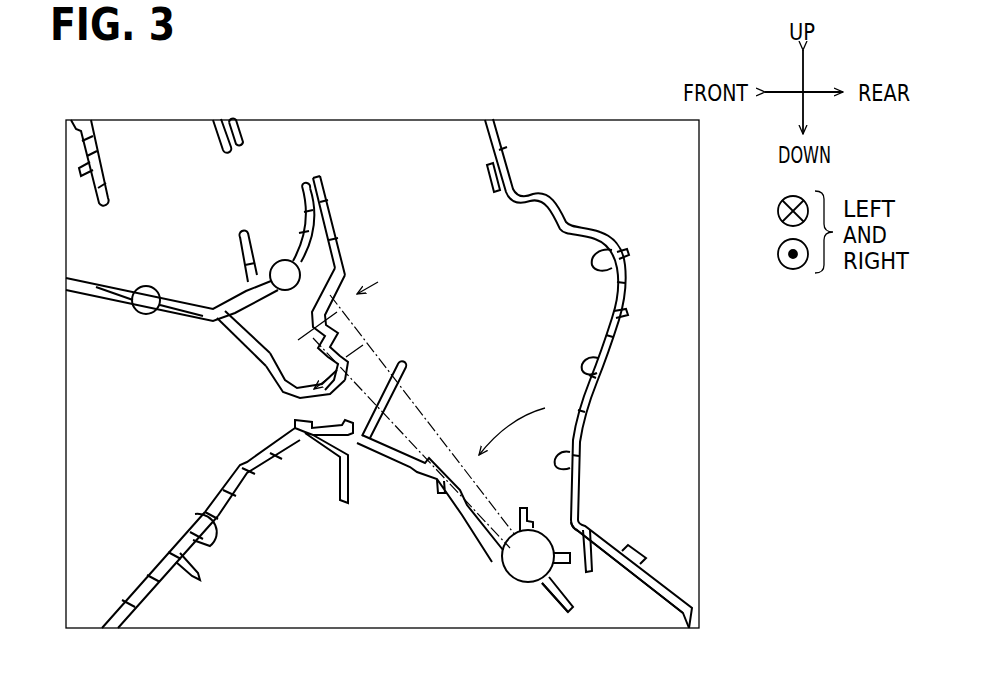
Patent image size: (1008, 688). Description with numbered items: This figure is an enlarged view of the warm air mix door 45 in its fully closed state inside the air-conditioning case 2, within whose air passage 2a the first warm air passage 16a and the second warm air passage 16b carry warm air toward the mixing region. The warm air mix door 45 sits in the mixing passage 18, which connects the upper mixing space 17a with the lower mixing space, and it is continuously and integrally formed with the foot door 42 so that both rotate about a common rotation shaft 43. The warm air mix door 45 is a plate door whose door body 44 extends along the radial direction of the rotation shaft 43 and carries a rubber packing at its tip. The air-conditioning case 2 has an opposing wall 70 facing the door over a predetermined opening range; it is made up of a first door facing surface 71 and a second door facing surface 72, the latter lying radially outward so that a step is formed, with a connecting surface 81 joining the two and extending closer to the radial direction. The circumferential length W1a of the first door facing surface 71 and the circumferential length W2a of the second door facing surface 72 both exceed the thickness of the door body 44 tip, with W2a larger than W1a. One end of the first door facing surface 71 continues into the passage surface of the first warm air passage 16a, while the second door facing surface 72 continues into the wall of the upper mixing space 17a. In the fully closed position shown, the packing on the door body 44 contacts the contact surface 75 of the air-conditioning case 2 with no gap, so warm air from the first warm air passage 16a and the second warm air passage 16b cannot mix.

The air-conditioning case 2 is at (626, 283).
The air passage 2a is at (625, 267).
The first warm air passage 16a is at (282, 436).
The second warm air passage 16b is at (232, 492).
The upper mixing space 17a is at (583, 353).
The mixing passage 18 is at (562, 448).
The foot door 42 is at (545, 408).
The rotation shaft 43 is at (515, 545).
The door body 44 is at (562, 490).
The warm air mix door 45 is at (752, 477).
The opposing wall 70 is at (425, 53).
The first door facing surface 71 is at (387, 348).
The second door facing surface 72 is at (353, 293).
The contact surface 75 is at (318, 404).
The connecting surface 81 is at (340, 312).
The circumferential length of the first door facing surface W1a is at (337, 388).
The circumferential length of the second door facing surface W2a is at (347, 290).